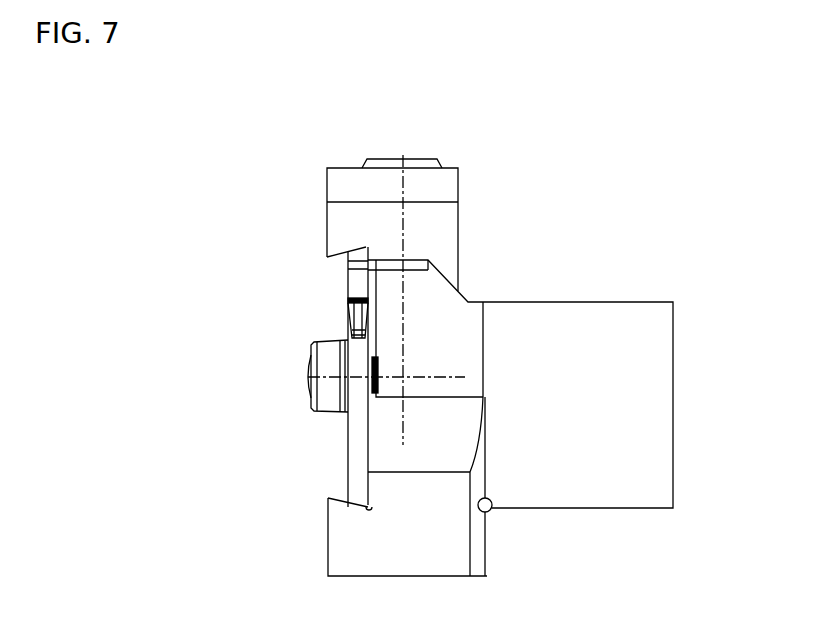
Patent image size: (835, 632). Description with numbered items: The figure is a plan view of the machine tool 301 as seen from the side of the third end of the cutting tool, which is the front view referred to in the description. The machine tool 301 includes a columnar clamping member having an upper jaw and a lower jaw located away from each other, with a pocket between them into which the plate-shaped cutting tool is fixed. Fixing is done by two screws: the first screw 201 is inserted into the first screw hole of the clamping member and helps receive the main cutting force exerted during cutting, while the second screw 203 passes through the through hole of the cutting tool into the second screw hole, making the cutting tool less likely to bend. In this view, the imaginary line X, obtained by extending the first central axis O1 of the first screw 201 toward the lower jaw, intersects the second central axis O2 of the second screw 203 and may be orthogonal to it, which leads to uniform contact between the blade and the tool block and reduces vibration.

The machine tool 301 is at (297, 152).
The first screw 201 is at (437, 158).
The first central axis O1 is at (405, 232).
The second central axis O2 is at (427, 373).
The imaginary line X is at (400, 408).
The second screw 203 is at (313, 352).